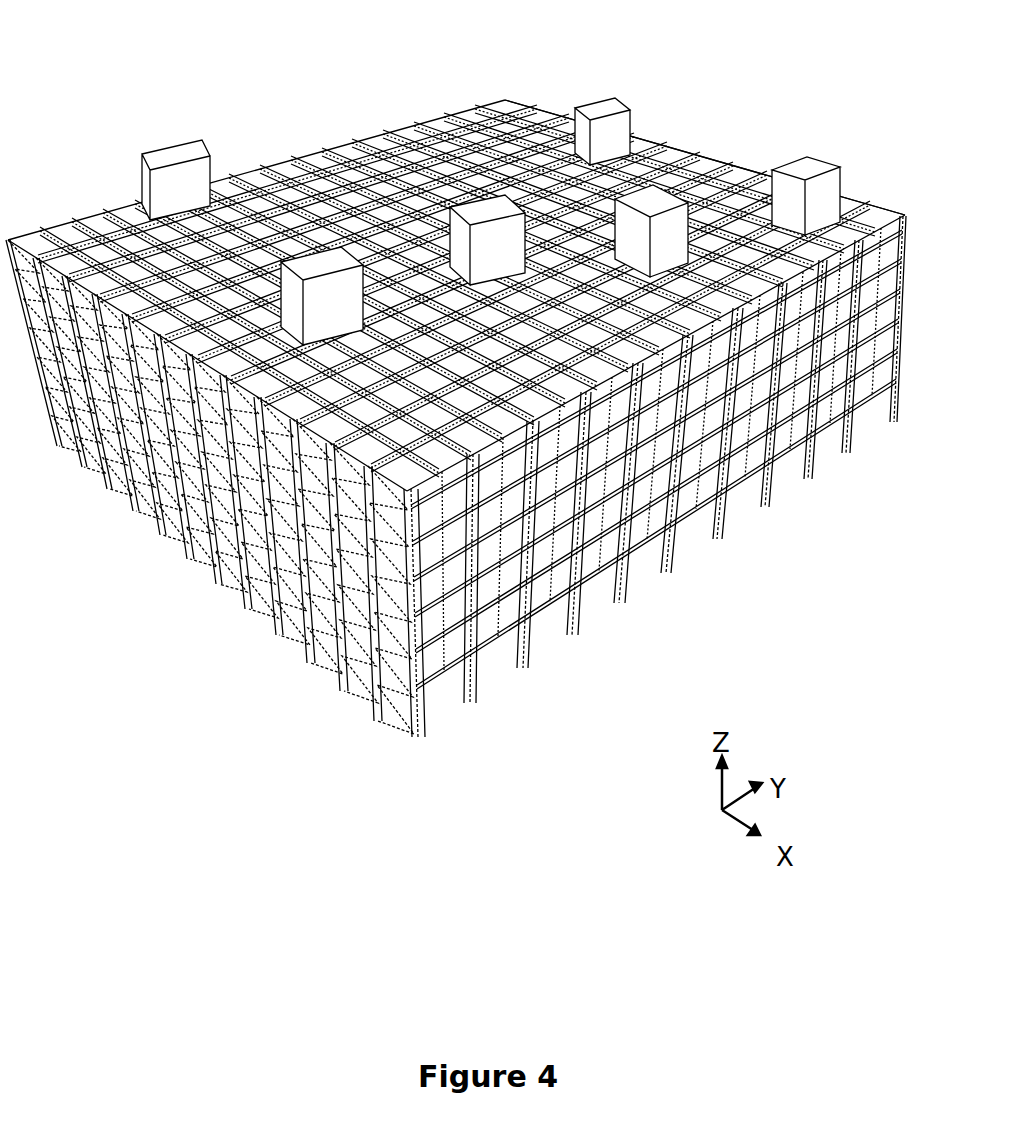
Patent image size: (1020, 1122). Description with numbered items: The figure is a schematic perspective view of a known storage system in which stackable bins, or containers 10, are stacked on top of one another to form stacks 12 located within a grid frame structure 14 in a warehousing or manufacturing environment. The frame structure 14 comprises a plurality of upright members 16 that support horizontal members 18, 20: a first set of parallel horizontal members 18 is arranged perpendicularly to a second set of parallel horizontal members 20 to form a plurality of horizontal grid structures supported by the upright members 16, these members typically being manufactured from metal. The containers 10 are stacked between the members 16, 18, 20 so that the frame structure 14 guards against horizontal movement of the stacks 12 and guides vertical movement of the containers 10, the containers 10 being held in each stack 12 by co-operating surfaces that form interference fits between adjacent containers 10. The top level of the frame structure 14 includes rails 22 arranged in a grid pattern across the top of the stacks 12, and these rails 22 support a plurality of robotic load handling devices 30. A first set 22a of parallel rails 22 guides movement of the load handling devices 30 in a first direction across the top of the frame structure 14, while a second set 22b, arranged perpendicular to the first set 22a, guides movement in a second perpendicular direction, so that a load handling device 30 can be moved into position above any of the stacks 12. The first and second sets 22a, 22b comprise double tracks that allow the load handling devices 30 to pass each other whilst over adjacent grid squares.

The container 10 is at (433, 622).
The stack 12 is at (755, 481).
The frame structure 14 is at (878, 210).
The upright member 16 is at (325, 620).
The first set of parallel horizontal members 18 is at (556, 533).
The second set of parallel horizontal members 20 is at (240, 498).
The rails 22 is at (100, 235).
The first set of parallel rails 22a is at (235, 350).
The second set of parallel rails 22b is at (320, 220).
The robotic load handling device 30 is at (617, 130).